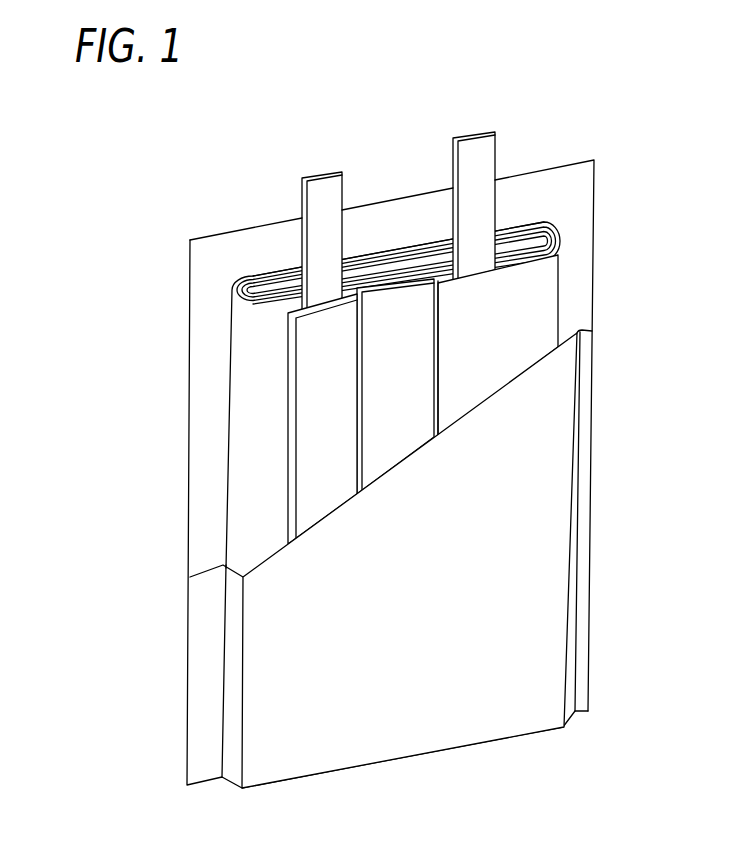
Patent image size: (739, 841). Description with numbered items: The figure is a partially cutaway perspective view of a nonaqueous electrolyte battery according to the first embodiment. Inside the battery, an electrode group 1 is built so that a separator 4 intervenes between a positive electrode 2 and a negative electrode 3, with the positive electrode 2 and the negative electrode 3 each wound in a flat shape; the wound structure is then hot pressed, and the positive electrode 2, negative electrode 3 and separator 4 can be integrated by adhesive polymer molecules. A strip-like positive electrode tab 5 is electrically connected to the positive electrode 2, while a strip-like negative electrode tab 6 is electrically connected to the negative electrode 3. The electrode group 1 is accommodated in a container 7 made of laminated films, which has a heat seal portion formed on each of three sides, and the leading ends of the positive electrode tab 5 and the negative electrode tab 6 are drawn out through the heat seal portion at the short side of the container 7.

The electrode group 1 is at (445, 326).
The positive electrode 2 is at (545, 290).
The negative electrode 3 is at (337, 428).
The separator 4 is at (422, 348).
The positive electrode tab 5 is at (479, 145).
The negative electrode tab 6 is at (324, 178).
The container 7 is at (542, 568).